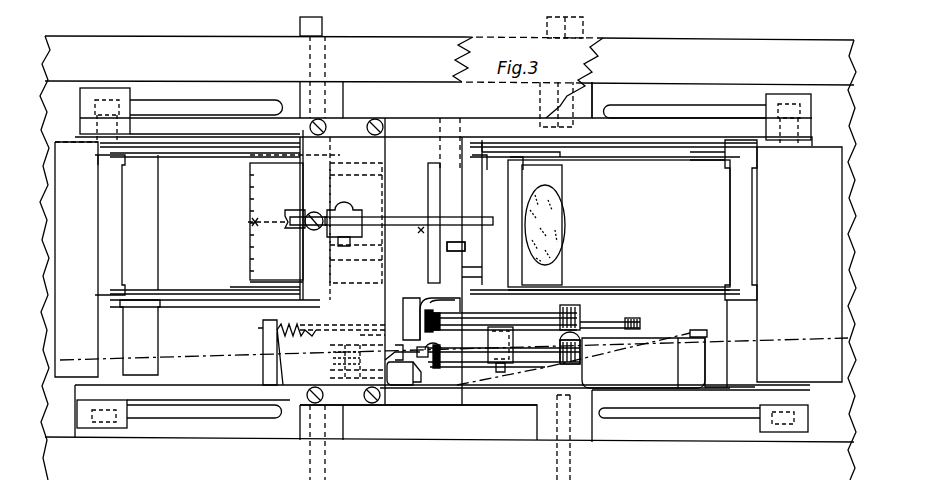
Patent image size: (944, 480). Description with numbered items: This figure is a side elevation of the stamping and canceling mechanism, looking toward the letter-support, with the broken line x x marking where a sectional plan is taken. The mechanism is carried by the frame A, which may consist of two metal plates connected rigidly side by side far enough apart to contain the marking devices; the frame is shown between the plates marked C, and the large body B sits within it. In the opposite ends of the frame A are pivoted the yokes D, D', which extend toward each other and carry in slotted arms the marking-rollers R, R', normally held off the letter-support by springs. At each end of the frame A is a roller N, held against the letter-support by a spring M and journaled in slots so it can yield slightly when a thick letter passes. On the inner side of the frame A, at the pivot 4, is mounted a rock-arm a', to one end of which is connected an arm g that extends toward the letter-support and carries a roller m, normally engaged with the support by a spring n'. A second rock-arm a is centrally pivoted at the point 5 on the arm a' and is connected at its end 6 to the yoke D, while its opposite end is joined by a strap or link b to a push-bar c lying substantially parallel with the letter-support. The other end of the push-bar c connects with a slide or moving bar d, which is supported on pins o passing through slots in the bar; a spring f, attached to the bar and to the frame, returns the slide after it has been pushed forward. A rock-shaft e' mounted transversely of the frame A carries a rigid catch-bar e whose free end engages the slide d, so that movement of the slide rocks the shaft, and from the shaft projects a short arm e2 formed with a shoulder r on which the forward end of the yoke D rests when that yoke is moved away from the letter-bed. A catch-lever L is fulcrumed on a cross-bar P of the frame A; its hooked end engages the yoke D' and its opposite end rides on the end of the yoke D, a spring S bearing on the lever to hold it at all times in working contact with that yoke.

The frame plates C is at (448, 258).
The frame A is at (443, 261).
The spring M is at (443, 262).
The roller N is at (448, 263).
The yoke D' is at (210, 225).
The yoke D is at (613, 222).
The marking-roller R' is at (266, 225).
The spring S is at (286, 212).
The cross-bar P is at (346, 248).
The catch-lever L is at (418, 226).
The rock-shaft e' is at (455, 212).
The short arm e2 is at (447, 246).
The shoulder r is at (466, 246).
The carriage block B is at (628, 252).
The marking-roller R is at (558, 218).
The broken line x is at (454, 348).
The spring f is at (284, 365).
The pins o is at (380, 322).
The strap or link b is at (422, 303).
The catch-bar e is at (418, 319).
The rock-arm a is at (502, 317).
The end 6 is at (575, 298).
The rock-arm a' is at (557, 359).
The pivot 5 is at (502, 348).
The slide or moving bar d is at (632, 360).
The pivot 4 is at (578, 358).
The push-bar c is at (610, 324).
The roller m is at (416, 351).
The arm g is at (403, 370).
The spring n' is at (418, 418).